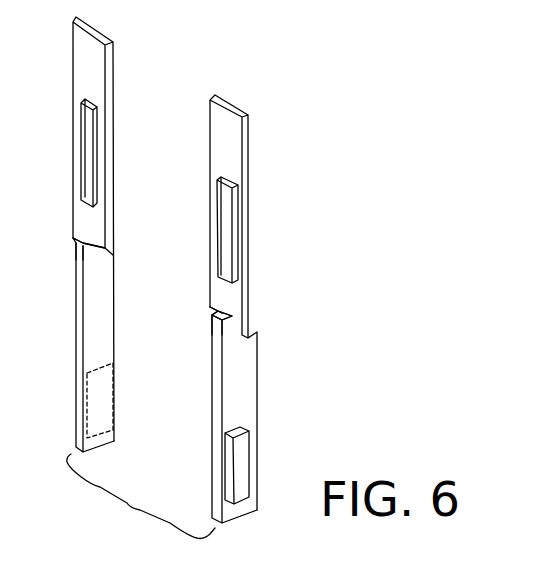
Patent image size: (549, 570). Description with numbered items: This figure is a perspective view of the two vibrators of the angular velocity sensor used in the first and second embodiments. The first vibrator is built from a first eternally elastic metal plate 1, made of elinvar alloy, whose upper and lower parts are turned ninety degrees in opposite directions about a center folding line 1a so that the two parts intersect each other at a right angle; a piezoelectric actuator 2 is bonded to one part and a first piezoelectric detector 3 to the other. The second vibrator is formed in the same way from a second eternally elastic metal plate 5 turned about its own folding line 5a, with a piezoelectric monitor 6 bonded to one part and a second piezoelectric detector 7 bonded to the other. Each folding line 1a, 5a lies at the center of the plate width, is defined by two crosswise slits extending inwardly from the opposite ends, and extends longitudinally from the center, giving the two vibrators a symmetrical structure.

The first eternally elastic metal plate 1 is at (96, 63).
The folding line 1a is at (78, 240).
The piezoelectric actuator 2 is at (112, 373).
The first piezoelectric detector 3 is at (91, 134).
The second eternally elastic metal plate 5 is at (234, 138).
The folding line 5a is at (250, 330).
The piezoelectric monitor 6 is at (247, 450).
The second piezoelectric detector 7 is at (228, 207).